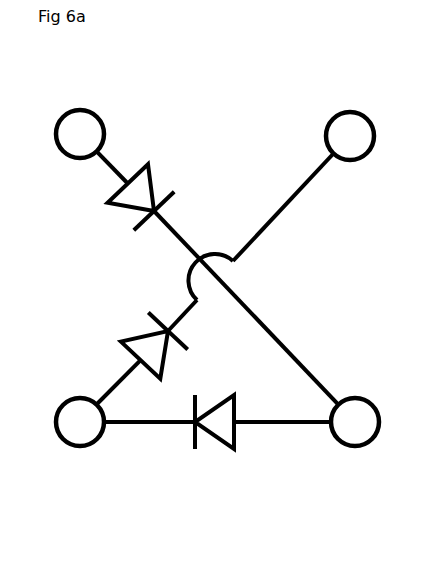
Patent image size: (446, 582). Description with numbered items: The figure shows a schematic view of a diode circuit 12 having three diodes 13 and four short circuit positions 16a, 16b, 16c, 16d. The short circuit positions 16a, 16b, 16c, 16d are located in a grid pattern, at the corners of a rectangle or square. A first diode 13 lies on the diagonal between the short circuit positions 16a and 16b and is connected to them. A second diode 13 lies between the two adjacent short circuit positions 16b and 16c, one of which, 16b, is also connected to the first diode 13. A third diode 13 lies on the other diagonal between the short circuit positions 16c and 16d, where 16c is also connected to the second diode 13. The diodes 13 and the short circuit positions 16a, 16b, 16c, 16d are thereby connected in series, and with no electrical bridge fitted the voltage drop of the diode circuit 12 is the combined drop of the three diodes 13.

The diode circuit 12 is at (258, 97).
The diode 13 is at (168, 168).
The short circuit position 16a is at (52, 157).
The short circuit position 16b is at (343, 453).
The short circuit position 16c is at (77, 455).
The short circuit position 16d is at (352, 163).